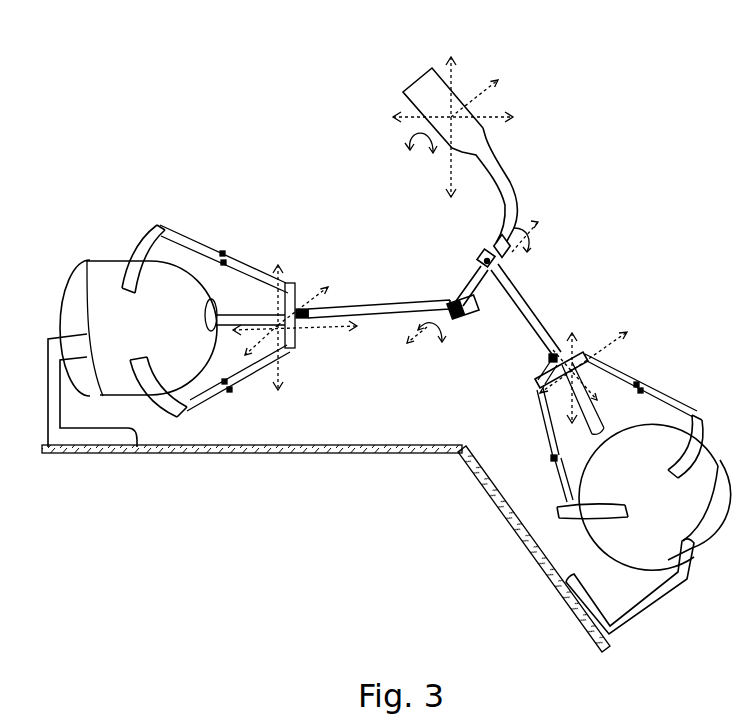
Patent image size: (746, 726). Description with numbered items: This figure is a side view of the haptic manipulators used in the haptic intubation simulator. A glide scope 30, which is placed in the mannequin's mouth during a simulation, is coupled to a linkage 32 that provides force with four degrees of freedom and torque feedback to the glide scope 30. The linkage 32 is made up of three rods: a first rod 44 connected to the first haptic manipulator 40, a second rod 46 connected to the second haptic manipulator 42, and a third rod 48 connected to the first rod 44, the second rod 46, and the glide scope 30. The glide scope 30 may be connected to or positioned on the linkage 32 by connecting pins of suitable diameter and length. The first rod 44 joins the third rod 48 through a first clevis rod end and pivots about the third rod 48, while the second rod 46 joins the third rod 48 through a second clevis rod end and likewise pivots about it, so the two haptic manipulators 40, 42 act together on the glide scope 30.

The glide scope 30 is at (412, 82).
The linkage 32 is at (485, 352).
The first haptic manipulator 40 is at (707, 533).
The second haptic manipulator 42 is at (85, 264).
The first rod 44 is at (513, 300).
The second rod 46 is at (363, 303).
The third rod 48 is at (478, 270).